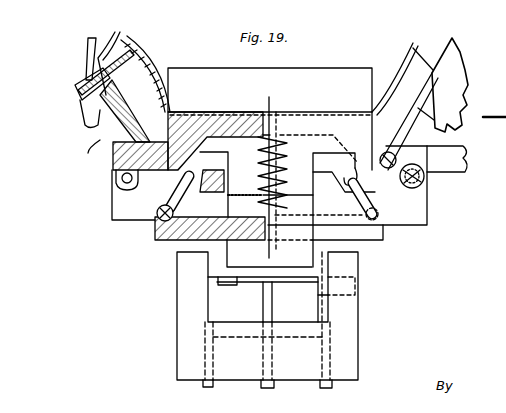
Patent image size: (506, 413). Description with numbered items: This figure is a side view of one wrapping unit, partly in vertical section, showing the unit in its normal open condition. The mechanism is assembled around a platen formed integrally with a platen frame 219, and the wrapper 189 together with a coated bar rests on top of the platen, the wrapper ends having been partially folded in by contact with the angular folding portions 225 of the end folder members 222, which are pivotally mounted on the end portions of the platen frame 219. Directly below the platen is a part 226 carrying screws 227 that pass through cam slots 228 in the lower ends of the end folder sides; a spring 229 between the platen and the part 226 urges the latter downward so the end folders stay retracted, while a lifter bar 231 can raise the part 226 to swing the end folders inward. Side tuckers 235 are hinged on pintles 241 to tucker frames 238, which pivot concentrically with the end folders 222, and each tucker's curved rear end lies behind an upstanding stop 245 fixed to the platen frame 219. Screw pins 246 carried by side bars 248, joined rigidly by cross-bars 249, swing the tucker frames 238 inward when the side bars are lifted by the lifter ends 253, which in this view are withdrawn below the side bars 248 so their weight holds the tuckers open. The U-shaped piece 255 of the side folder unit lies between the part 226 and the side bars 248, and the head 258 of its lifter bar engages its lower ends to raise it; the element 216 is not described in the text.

The wrapper 189 is at (405, 66).
The housing 216 is at (237, 120).
The platen frame 219 is at (113, 172).
The end folder member 222 is at (112, 122).
The angular folding portions 225 is at (124, 24).
The part 226 is at (158, 241).
The screws 227 is at (152, 227).
The cam slot 228 is at (170, 192).
The spring 229 is at (263, 142).
The lifter bar 231 is at (203, 360).
The side tuckers 235 is at (96, 46).
The tucker frame 238 is at (112, 167).
The pintles 241 is at (90, 79).
The upstanding stop 245 is at (108, 133).
The screw pins 246 is at (425, 182).
The side bars 248 is at (418, 213).
The cross-bars 249 is at (199, 184).
The lifter ends 253 is at (182, 256).
The U-shaped piece 255 is at (243, 192).
The head 258 is at (232, 287).